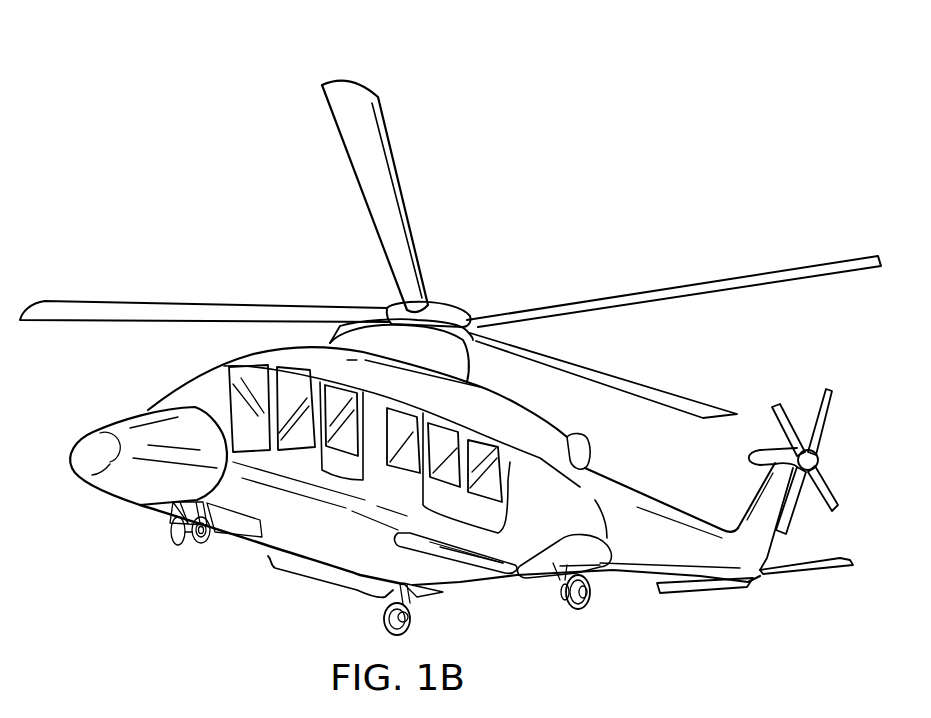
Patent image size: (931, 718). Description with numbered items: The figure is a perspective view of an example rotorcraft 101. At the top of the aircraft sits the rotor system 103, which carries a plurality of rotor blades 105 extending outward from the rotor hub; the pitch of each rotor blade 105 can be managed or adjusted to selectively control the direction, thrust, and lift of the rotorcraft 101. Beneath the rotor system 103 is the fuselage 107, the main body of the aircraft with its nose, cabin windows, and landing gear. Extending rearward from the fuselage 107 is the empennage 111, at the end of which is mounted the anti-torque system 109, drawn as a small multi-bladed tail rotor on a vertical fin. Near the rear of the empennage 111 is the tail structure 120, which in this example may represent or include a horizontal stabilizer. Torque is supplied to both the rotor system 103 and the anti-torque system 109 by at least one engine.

The rotorcraft 101 is at (190, 76).
The rotor system 103 is at (462, 272).
The rotor blades 105 is at (662, 297).
The fuselage 107 is at (268, 541).
The anti-torque system 109 is at (808, 374).
The empennage 111 is at (637, 567).
The tail structure 120 is at (813, 575).